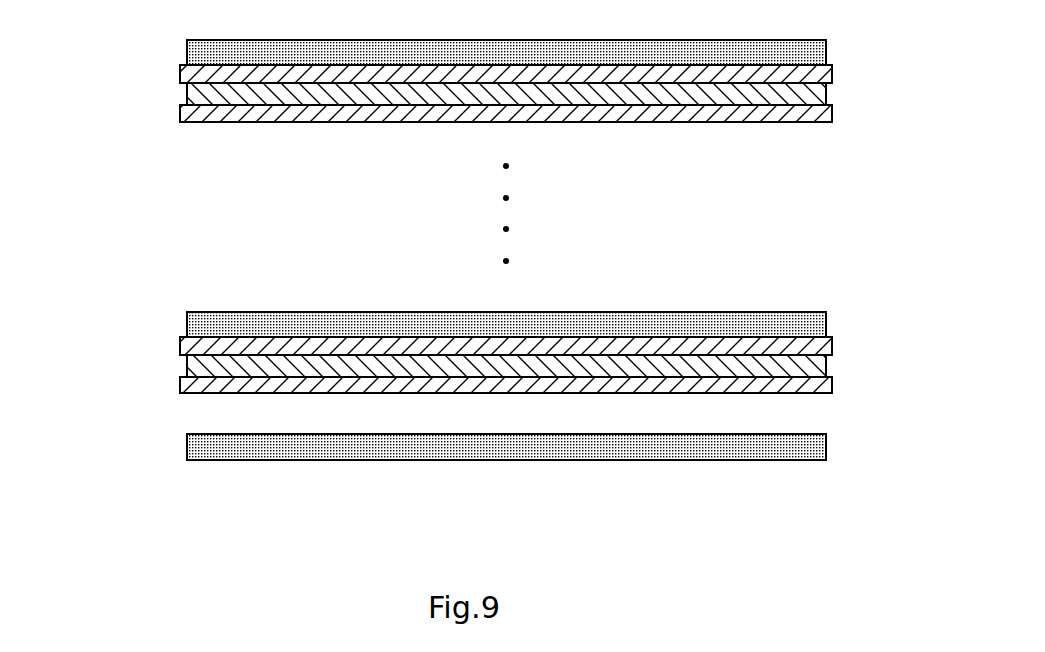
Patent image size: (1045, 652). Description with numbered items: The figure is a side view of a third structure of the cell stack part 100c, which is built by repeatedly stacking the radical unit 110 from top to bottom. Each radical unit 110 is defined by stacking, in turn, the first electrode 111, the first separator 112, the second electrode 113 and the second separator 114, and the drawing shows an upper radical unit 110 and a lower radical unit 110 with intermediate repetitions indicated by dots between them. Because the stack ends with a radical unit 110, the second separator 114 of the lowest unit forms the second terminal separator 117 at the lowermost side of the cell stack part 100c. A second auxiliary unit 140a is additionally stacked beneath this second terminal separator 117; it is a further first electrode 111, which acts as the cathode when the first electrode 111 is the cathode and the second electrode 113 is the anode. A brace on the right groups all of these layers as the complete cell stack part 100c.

The cell stack part 100c is at (838, 45).
The radical unit 110 is at (93, 50).
The first electrode 111 is at (188, 50).
The first separator 112 is at (181, 73).
The second electrode 113 is at (188, 93).
The second separator 114 is at (181, 113).
The second terminal separator 117 is at (115, 410).
The second auxiliary unit 140a is at (452, 459).